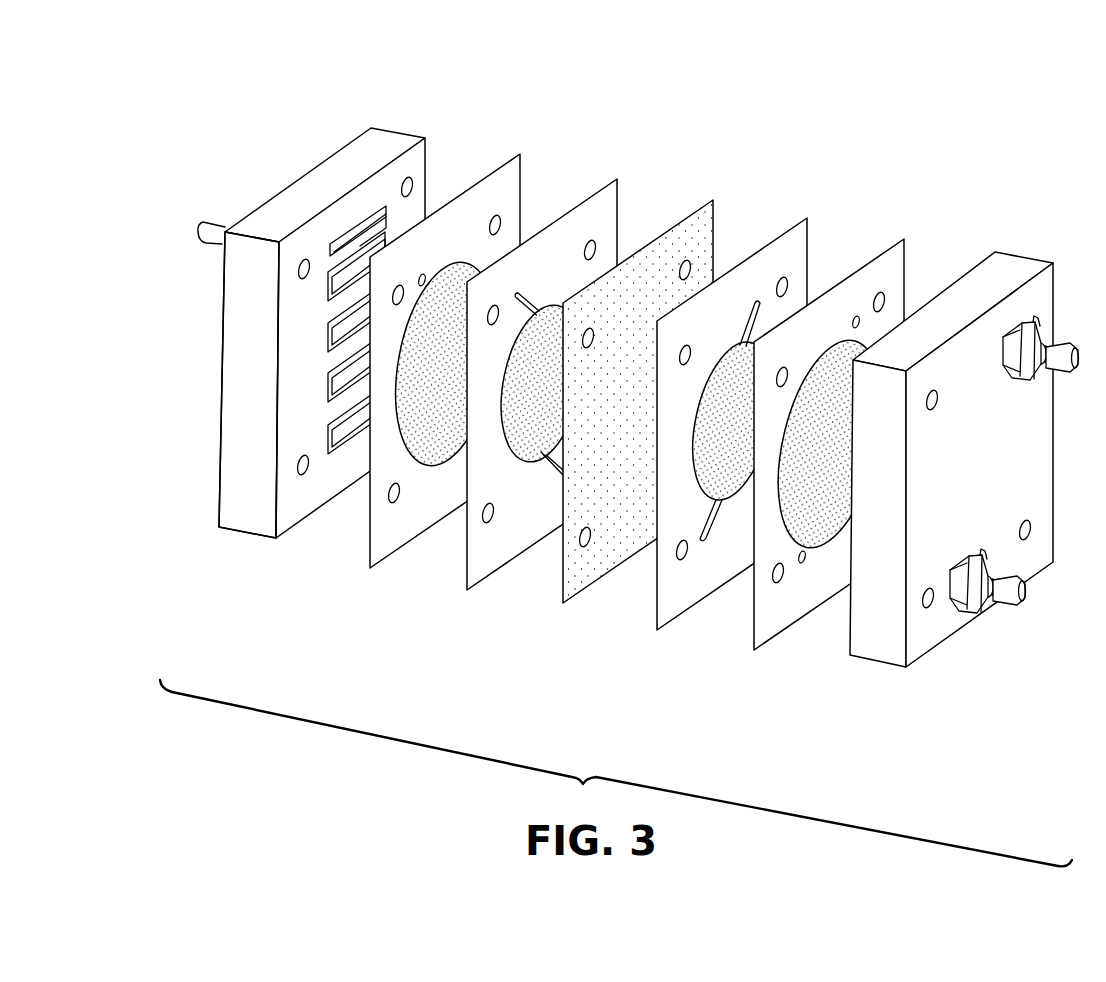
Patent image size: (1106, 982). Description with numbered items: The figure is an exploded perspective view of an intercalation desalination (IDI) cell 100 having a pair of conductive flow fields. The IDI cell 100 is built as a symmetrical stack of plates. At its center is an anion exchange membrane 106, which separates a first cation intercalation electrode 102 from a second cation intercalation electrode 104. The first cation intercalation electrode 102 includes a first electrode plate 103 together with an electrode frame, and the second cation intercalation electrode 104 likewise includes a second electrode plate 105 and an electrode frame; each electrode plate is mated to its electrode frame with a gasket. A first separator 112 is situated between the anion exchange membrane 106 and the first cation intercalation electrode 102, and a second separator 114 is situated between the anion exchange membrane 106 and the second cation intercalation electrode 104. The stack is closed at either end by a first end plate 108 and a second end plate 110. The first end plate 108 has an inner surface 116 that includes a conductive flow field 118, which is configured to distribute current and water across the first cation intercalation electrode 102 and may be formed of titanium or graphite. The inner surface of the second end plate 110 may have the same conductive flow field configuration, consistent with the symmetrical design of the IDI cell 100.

The intercalation desalination (IDI) cell 100 is at (638, 378).
The first cation intercalation electrode 102 is at (498, 166).
The first electrode plate 103 is at (428, 470).
The second cation intercalation electrode 104 is at (880, 248).
The second electrode plate 105 is at (816, 547).
The anion exchange membrane 106 is at (690, 213).
The first end plate 108 is at (377, 145).
The second end plate 110 is at (1007, 273).
The first separator 112 is at (597, 190).
The second separator 114 is at (783, 230).
The inner surface 116 is at (292, 505).
The conductive flow field 118 is at (335, 455).